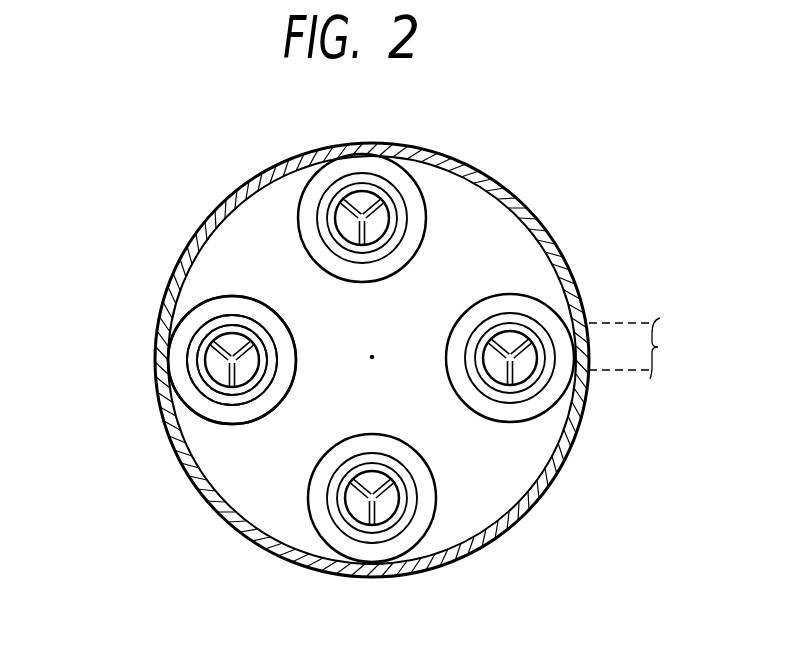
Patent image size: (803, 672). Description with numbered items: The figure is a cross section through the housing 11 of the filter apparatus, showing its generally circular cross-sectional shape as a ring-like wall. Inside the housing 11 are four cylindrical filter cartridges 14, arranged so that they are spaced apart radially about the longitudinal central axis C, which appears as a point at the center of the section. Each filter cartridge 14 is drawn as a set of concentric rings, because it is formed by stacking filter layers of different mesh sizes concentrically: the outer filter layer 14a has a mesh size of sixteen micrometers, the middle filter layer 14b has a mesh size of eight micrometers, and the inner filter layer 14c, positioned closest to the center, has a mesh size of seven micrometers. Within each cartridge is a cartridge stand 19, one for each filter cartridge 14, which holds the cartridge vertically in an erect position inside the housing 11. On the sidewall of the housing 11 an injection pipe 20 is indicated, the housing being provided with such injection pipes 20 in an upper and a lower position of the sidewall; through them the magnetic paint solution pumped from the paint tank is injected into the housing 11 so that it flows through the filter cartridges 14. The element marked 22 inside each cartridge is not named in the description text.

The housing 11 is at (537, 220).
The filter cartridge 14 is at (348, 167).
The outer filter layer 14a is at (190, 313).
The middle filter layer 14b is at (197, 338).
The inner filter layer 14c is at (203, 360).
The cartridge stand 19 is at (375, 200).
The inner ring 22 is at (382, 223).
The injection pipe 20 is at (633, 372).
The central axis C is at (372, 358).